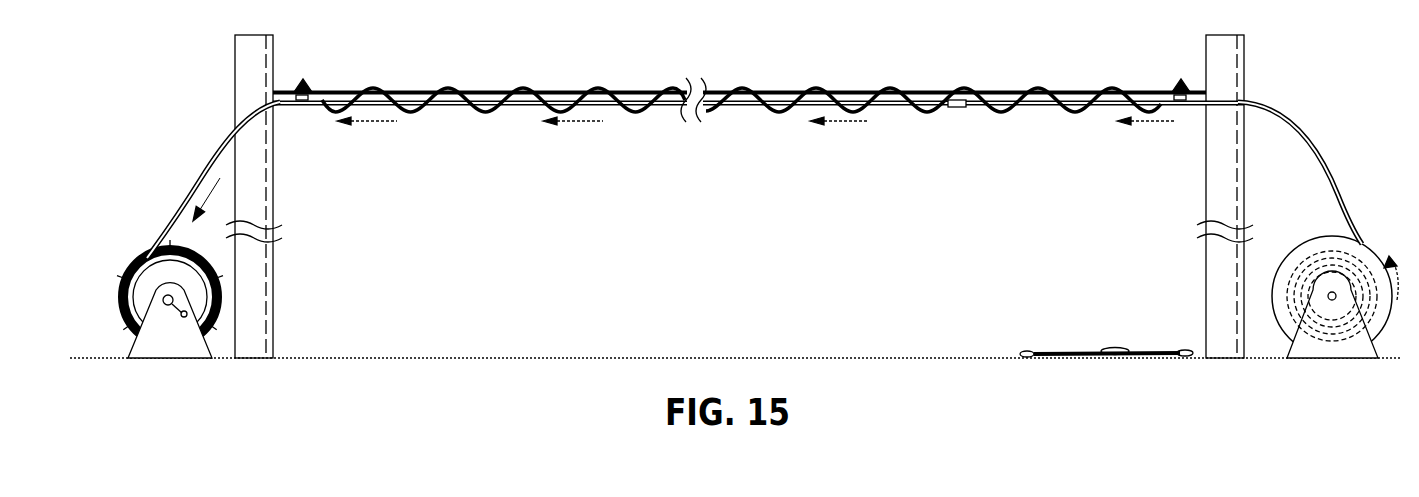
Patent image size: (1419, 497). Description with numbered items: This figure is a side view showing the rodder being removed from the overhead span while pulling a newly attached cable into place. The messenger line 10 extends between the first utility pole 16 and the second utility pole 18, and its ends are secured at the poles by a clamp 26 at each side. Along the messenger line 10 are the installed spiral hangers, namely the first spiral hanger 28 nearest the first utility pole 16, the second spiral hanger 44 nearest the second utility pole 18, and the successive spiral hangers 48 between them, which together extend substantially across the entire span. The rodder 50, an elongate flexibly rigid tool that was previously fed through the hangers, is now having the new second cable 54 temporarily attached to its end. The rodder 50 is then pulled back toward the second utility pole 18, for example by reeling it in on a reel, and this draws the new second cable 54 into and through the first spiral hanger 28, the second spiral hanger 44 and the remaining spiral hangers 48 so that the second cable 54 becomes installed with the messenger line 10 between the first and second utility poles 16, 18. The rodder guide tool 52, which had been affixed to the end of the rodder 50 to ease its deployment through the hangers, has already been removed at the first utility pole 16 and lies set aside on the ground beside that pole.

The messenger line 10 is at (1138, 90).
The first utility pole 16 is at (1245, 58).
The second utility pole 18 is at (235, 92).
The clamp 26 is at (309, 78).
The first spiral hanger 28 is at (1077, 110).
The second spiral hanger 44 is at (327, 110).
The spiral hanger 48 is at (453, 89).
The rodder 50 is at (193, 190).
The rodder guide tool 52 is at (1147, 347).
The second cable 54 is at (1040, 106).